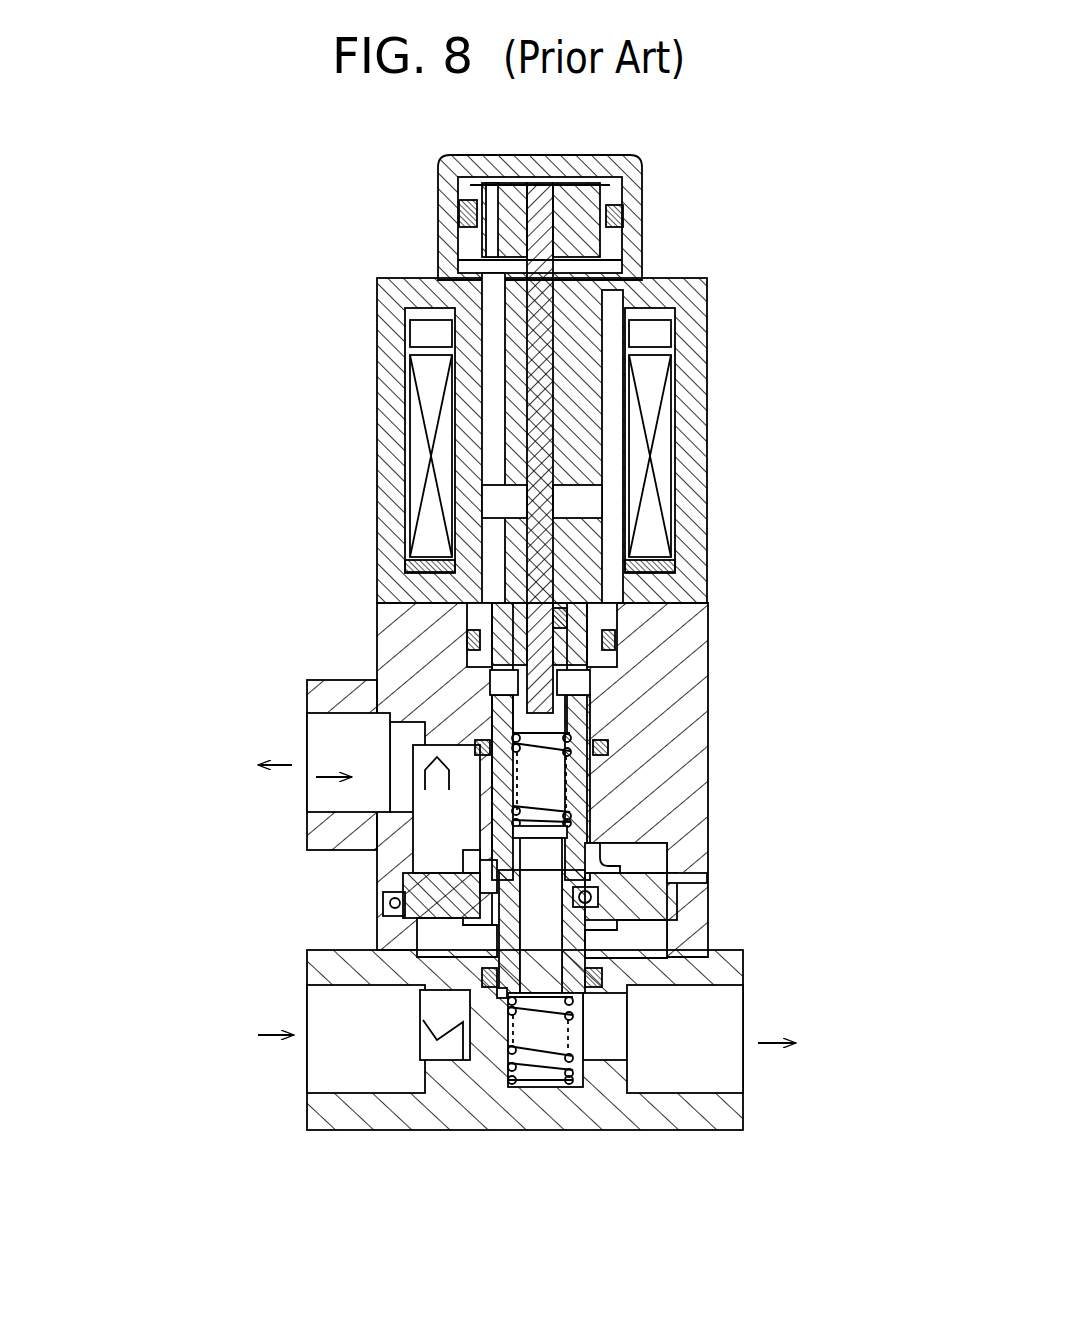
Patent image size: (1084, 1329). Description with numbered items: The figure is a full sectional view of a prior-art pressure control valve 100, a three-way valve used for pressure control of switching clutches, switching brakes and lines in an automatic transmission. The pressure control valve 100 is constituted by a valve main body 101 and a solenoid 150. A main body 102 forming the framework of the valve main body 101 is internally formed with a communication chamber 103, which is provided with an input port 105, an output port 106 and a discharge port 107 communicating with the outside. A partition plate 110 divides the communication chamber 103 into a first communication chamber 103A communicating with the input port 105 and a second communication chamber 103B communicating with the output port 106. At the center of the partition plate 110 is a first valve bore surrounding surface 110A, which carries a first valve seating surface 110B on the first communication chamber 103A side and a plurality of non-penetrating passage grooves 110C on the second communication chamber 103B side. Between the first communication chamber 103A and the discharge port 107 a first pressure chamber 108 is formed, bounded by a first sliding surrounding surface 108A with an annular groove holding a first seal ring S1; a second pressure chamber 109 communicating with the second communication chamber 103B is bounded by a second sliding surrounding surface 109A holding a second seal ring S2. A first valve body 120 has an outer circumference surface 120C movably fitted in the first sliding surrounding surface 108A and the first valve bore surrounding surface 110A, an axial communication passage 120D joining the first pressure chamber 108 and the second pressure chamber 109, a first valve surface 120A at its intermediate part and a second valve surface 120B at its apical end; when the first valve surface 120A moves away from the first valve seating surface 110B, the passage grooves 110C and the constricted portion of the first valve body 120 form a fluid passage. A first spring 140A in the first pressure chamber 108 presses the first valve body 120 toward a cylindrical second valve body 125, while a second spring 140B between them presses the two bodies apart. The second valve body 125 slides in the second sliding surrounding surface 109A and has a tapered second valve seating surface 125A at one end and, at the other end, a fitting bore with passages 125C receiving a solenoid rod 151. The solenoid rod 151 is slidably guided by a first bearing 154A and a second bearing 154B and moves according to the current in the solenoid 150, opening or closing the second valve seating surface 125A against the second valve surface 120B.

The pressure control valve 100 is at (714, 279).
The solenoid 150 is at (374, 408).
The second bearing 154B is at (458, 203).
The first bearing 154A is at (566, 628).
The solenoid rod 151 is at (540, 498).
The second valve body 125 is at (578, 775).
The valve main body 101 is at (377, 642).
The main body 102 is at (305, 698).
The output port 106 is at (332, 795).
The second communication chamber 103B is at (432, 848).
The second sliding surrounding surface 109A is at (602, 735).
The second pressure chamber 109 is at (612, 703).
The passages 125C is at (505, 733).
The second seal ring S2 is at (606, 745).
The second spring 140B is at (513, 745).
The second valve surface 120B is at (583, 800).
The second valve seating surface 125A is at (578, 820).
The passage grooves 110C is at (605, 858).
The communication passage 120D is at (612, 882).
The first valve bore surrounding surface 110A is at (662, 898).
The first valve surface 120A is at (652, 920).
The first valve body 120 is at (592, 946).
The first communication chamber 103A is at (407, 931).
The partition plate 110 is at (470, 890).
The communication chamber 103 is at (427, 941).
The input port 105 is at (332, 1075).
The discharge port 107 is at (715, 1072).
The first sliding surrounding surface 108A is at (500, 1062).
The first pressure chamber 108 is at (502, 1066).
The first valve seating surface 110B is at (482, 976).
The first seal ring S1 is at (490, 993).
The outer circumference surface 120C is at (605, 992).
The first spring 140A is at (556, 1084).